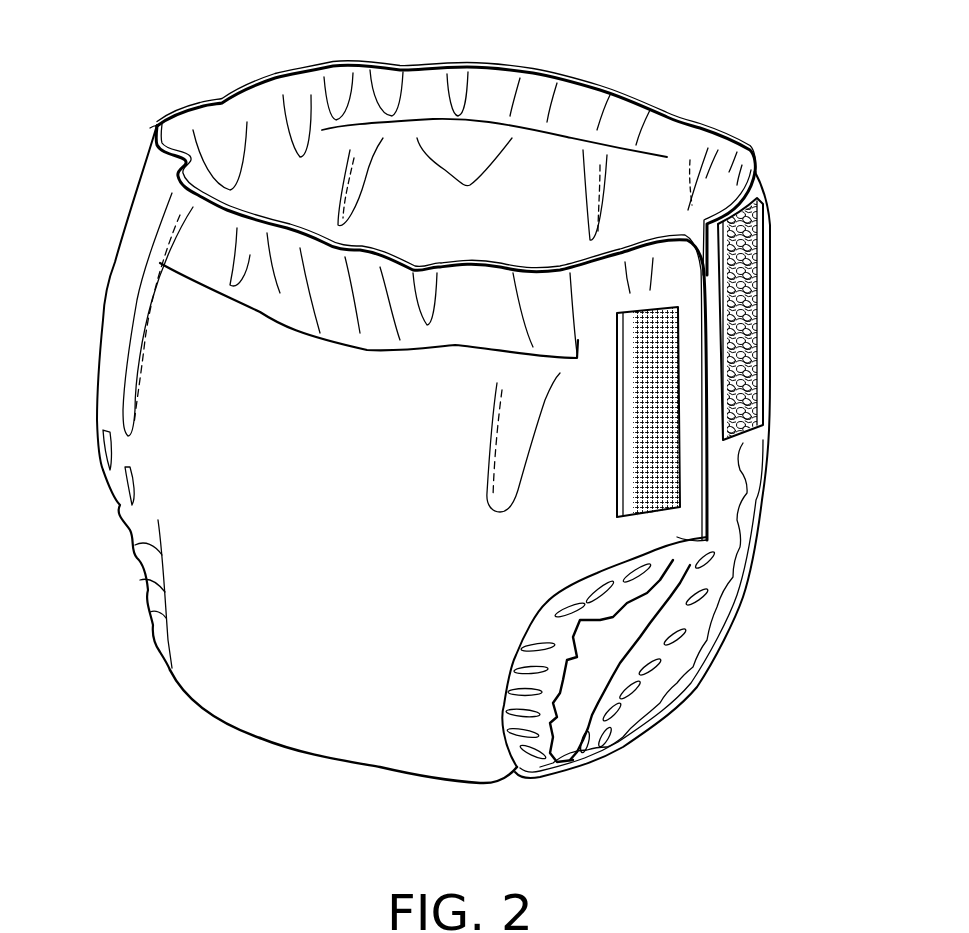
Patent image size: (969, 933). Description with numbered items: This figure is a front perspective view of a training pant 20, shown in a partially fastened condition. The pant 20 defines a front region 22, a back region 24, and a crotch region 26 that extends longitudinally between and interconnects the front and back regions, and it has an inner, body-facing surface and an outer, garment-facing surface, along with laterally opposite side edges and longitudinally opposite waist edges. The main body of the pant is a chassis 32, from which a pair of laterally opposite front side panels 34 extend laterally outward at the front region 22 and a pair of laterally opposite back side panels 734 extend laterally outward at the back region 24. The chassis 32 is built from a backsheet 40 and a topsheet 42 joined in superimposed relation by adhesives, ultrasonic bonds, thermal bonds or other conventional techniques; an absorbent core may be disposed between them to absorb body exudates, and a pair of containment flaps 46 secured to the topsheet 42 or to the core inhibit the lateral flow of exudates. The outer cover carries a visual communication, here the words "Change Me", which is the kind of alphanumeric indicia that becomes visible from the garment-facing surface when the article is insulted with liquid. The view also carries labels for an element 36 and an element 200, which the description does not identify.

The training pant 20 is at (151, 99).
The front region 22 is at (787, 303).
The back region 24 is at (333, 572).
The crotch region 26 is at (487, 763).
The chassis 32 is at (153, 355).
The front side panels 34 is at (215, 130).
The leg cuff / leg elastic 36 is at (160, 645).
The backsheet 40 is at (215, 660).
The topsheet 42 is at (623, 166).
The containment flaps 46 is at (677, 620).
The graphic (CHANGE ME) 200 is at (300, 713).
The back side panels 734 is at (150, 128).